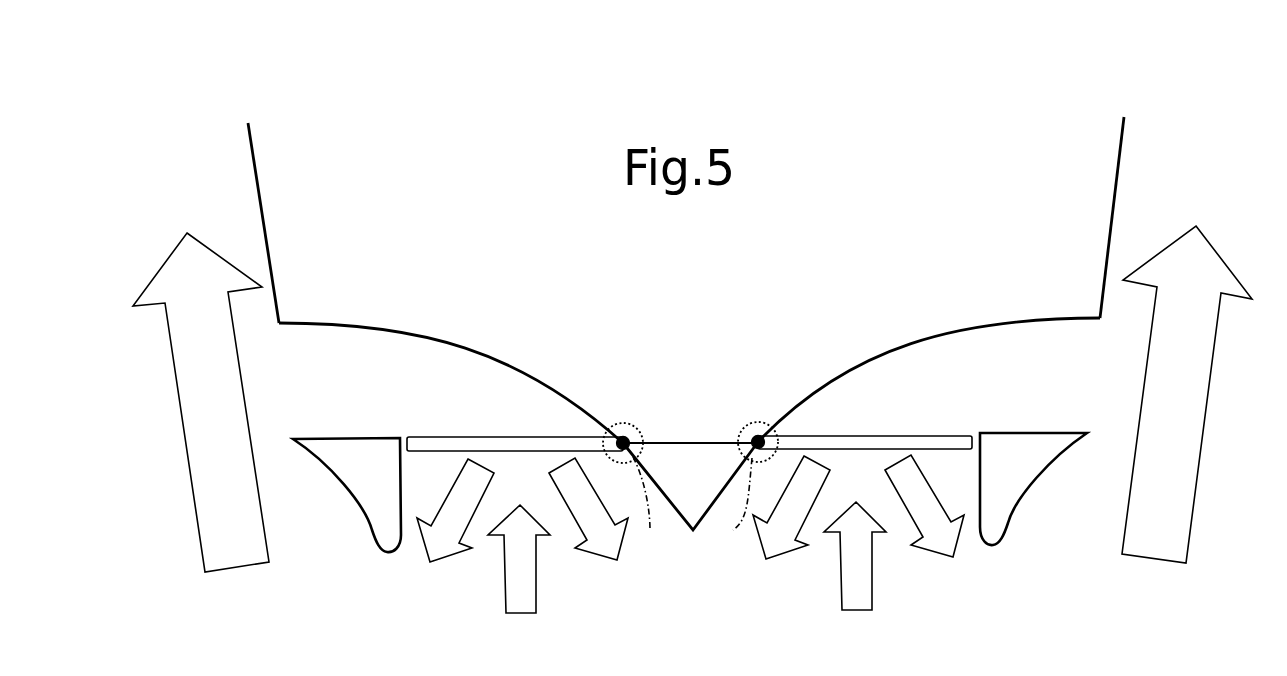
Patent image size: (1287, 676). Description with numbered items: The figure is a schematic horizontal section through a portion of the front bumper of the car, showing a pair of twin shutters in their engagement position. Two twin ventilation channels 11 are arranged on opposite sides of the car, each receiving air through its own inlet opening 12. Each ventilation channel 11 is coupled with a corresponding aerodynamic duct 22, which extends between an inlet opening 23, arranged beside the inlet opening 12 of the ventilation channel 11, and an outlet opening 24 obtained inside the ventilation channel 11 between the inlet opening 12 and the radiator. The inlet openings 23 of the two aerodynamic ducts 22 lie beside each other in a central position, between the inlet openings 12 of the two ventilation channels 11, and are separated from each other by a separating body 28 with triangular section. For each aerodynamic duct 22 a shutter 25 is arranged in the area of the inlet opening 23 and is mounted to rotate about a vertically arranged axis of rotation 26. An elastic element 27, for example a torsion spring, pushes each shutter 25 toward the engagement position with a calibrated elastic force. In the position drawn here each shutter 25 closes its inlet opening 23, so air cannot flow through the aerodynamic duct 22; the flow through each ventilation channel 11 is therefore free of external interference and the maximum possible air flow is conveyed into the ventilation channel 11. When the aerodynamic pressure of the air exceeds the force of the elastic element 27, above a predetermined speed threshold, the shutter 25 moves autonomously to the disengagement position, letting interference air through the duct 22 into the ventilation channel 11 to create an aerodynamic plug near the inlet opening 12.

The ventilation channel 11 is at (183, 160).
The inlet opening of the ventilation channel 12 is at (288, 468).
The aerodynamic duct 22 is at (380, 362).
The inlet opening of the aerodynamic duct 23 is at (542, 478).
The outlet opening 24 is at (280, 386).
The shutter 25 is at (522, 436).
The axis of rotation 26 is at (692, 507).
The elastic element 27 is at (622, 423).
The separating body 28 is at (685, 490).